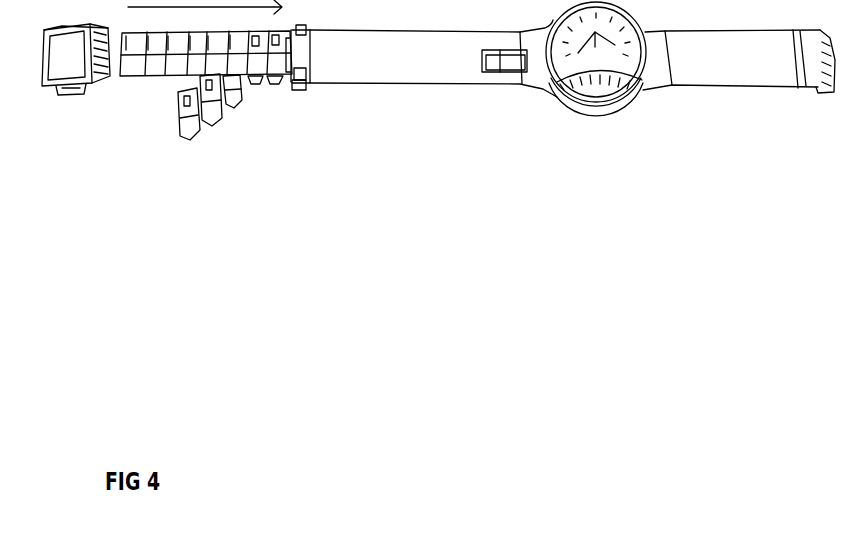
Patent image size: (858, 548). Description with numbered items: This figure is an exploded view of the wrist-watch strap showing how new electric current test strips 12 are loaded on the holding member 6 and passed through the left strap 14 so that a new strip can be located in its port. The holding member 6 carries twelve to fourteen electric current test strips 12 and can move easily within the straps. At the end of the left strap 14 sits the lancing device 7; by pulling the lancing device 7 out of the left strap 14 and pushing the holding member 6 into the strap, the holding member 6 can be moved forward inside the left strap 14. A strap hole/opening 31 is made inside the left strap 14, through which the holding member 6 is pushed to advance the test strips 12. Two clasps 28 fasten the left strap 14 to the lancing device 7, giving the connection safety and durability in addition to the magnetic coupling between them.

The lancing device 7 is at (52, 78).
The holding member 6 is at (132, 60).
The electric current test strip 12 is at (232, 95).
The clasp 28 is at (303, 93).
The left strap 14 is at (368, 60).
The strap hole/opening 31 is at (502, 72).